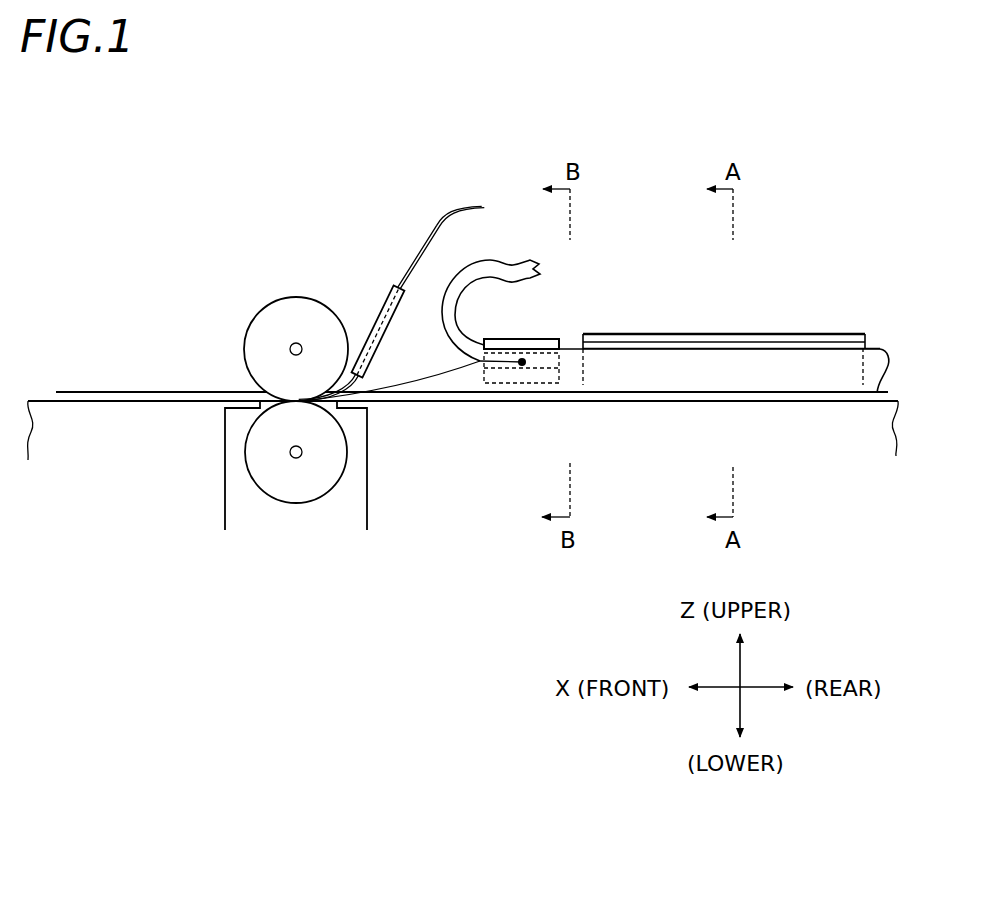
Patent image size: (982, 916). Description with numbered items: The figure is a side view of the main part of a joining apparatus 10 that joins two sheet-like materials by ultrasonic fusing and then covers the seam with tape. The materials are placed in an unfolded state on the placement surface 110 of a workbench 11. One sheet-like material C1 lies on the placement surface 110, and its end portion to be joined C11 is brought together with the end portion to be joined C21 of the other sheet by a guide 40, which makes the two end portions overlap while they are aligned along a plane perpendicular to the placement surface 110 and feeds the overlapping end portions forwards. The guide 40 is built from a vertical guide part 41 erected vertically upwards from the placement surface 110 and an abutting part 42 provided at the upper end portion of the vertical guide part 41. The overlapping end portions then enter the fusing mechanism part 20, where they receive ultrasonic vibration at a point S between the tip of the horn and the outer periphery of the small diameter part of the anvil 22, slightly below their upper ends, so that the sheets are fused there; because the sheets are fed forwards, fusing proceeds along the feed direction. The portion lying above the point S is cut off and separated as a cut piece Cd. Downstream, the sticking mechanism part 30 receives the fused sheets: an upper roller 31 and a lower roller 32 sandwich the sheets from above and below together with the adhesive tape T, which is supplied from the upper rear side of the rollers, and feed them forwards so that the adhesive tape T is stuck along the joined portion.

The joining apparatus 10 is at (325, 142).
The workbench 11 is at (883, 433).
The placement surface 110 is at (468, 452).
The sticking mechanism part 30 is at (205, 220).
The upper roller 31 is at (281, 301).
The lower roller 32 is at (278, 502).
The adhesive tape T is at (441, 223).
The cut piece Cd is at (523, 262).
The point S is at (520, 365).
The fusing mechanism part 20 is at (557, 312).
The anvil 22 is at (530, 338).
The sheet-like material C1 is at (730, 322).
The end portion to be joined C11 is at (849, 318).
The end portion to be joined C21 is at (877, 347).
The guide 40 is at (731, 424).
The vertical guide part 41 is at (862, 386).
The abutting part 42 is at (825, 345).